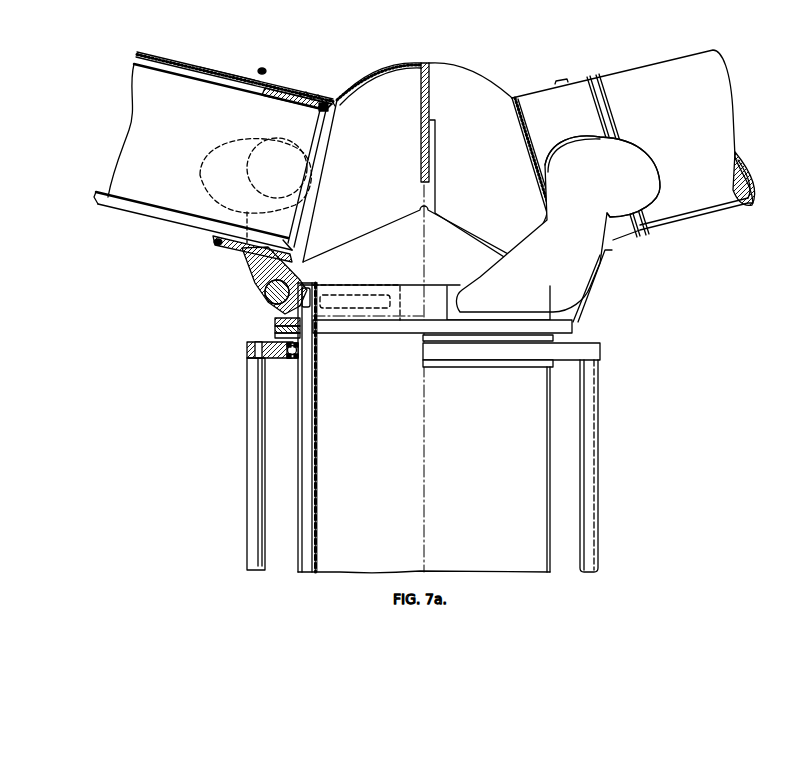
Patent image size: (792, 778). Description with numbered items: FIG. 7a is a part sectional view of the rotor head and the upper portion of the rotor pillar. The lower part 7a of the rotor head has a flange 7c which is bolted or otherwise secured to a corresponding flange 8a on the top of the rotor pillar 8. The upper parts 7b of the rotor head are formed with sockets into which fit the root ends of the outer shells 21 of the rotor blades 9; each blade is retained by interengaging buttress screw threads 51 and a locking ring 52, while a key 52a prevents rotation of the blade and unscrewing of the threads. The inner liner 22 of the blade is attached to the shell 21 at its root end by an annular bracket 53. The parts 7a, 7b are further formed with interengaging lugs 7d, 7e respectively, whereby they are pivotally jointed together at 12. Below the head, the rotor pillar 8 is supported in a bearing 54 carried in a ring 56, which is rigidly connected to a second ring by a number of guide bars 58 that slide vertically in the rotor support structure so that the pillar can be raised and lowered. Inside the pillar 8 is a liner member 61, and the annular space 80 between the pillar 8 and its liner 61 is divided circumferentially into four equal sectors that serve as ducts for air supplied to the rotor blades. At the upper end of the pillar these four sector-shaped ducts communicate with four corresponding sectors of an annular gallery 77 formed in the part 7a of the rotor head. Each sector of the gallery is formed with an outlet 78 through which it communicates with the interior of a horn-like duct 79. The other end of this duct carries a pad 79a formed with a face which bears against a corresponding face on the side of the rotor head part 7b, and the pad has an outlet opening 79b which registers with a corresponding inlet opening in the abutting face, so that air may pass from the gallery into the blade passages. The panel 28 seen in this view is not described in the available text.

The part of the rotor head 7a is at (438, 273).
The part of the rotor head 7b is at (384, 72).
The flange 7c is at (275, 329).
The lug 7d is at (275, 319).
The lug 7e is at (240, 261).
The rotor pillar 8 is at (298, 507).
The flange 8a is at (275, 335).
The rotor blade 9 is at (205, 66).
The pivot joint 12 is at (262, 291).
The outer shell 21 is at (230, 74).
The inner liner 22 is at (202, 84).
The panel 28 is at (143, 159).
The buttress screw thread 51 is at (318, 96).
The locking ring 52 is at (262, 78).
The key 52a is at (288, 84).
The annular bracket 53 is at (329, 109).
The bearing 54 is at (292, 360).
The ring 56 is at (247, 351).
The guide bar 58 is at (252, 437).
The liner member 61 is at (317, 511).
The annular gallery 77 is at (306, 315).
The outlet 78 is at (347, 308).
The horn-like duct 79 is at (305, 205).
The pad 79a is at (205, 193).
The outlet opening 79b is at (292, 177).
The annular space 80 is at (306, 438).